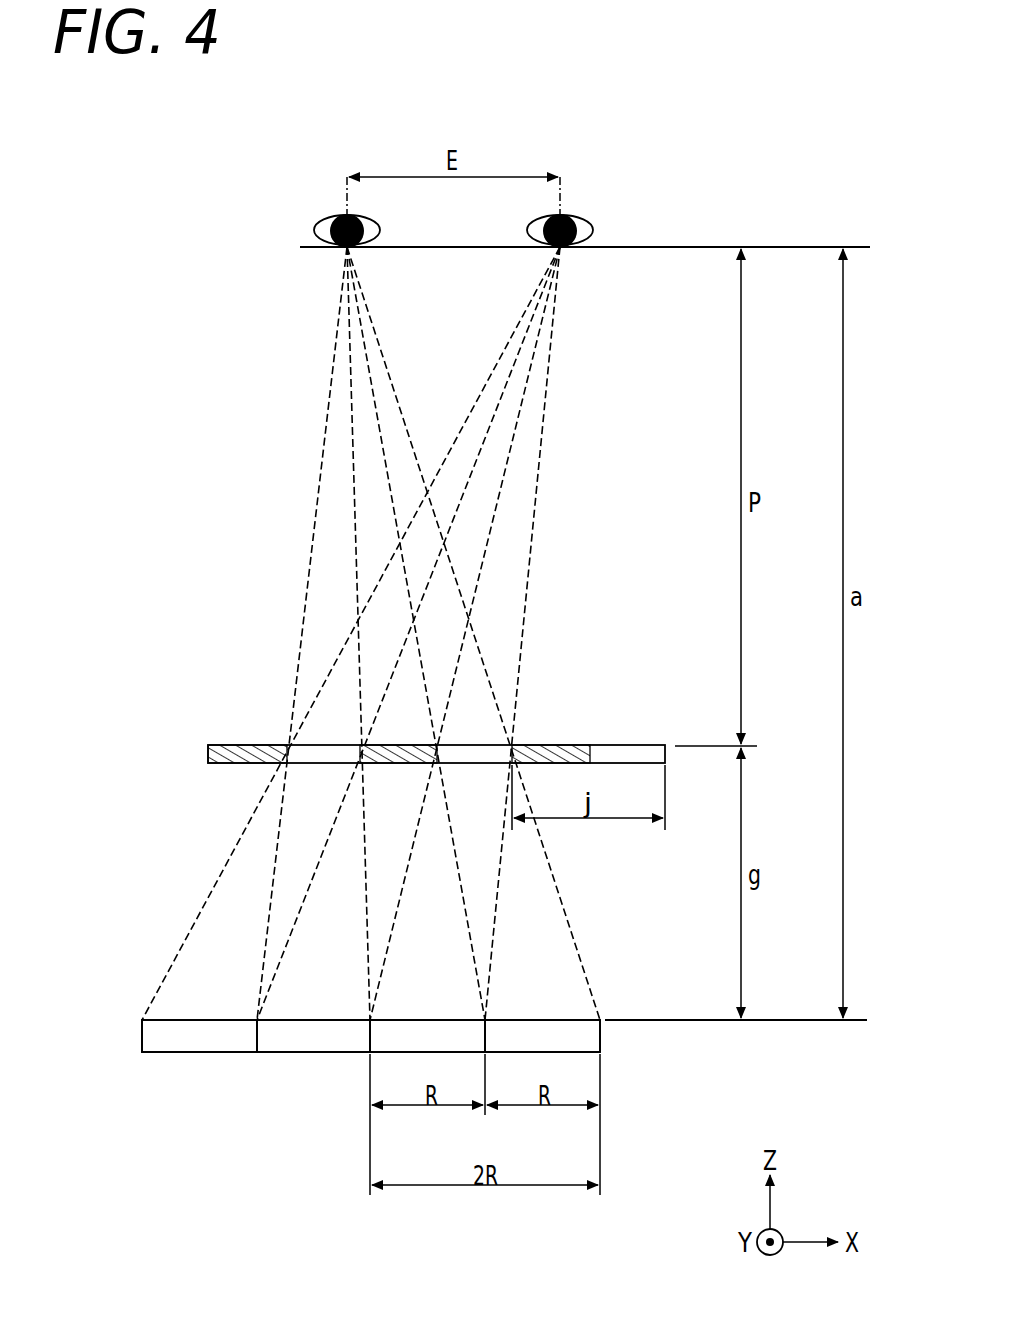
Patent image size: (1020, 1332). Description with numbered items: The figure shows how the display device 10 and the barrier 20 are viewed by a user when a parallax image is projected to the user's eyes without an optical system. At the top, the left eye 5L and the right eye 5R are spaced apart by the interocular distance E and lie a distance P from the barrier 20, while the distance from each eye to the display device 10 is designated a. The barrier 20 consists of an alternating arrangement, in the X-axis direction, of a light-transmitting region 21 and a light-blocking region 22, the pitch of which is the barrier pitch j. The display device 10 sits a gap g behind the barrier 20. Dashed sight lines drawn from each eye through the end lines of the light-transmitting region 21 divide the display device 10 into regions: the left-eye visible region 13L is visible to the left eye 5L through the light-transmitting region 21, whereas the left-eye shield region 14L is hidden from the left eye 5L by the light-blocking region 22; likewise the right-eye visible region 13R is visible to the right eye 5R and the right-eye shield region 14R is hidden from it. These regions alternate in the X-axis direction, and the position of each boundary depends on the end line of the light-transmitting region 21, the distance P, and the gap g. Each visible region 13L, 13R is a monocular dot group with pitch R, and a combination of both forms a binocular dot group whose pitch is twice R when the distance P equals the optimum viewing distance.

The right eye 5R is at (321, 224).
The left eye 5L is at (586, 225).
The barrier 20 is at (397, 776).
The light-transmitting region 21 is at (318, 763).
The light-blocking region 22 is at (397, 763).
The display device 10 is at (340, 1012).
The left-eye visible region 13L is at (205, 1032).
The right-eye shield region 14R is at (313, 1010).
The right-eye visible region 13R is at (318, 1032).
The left-eye shield region 14L is at (428, 1010).